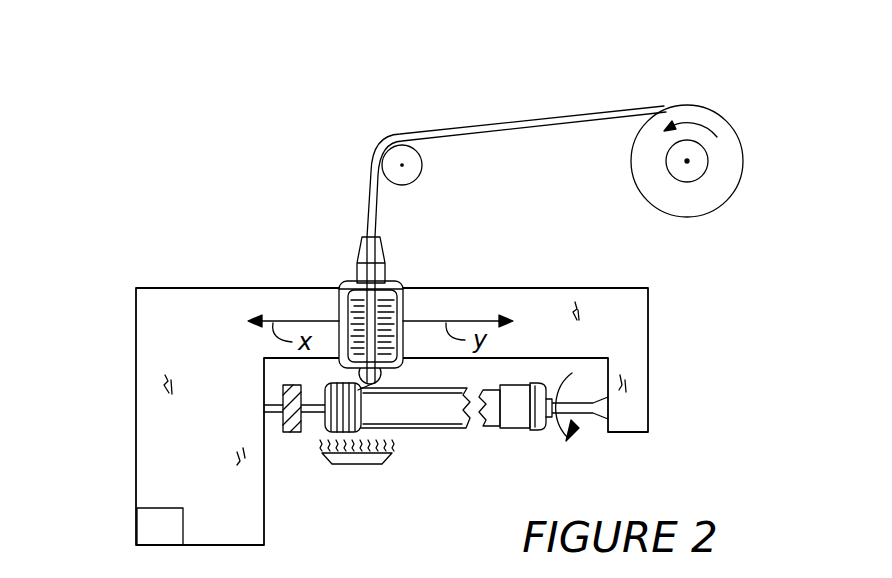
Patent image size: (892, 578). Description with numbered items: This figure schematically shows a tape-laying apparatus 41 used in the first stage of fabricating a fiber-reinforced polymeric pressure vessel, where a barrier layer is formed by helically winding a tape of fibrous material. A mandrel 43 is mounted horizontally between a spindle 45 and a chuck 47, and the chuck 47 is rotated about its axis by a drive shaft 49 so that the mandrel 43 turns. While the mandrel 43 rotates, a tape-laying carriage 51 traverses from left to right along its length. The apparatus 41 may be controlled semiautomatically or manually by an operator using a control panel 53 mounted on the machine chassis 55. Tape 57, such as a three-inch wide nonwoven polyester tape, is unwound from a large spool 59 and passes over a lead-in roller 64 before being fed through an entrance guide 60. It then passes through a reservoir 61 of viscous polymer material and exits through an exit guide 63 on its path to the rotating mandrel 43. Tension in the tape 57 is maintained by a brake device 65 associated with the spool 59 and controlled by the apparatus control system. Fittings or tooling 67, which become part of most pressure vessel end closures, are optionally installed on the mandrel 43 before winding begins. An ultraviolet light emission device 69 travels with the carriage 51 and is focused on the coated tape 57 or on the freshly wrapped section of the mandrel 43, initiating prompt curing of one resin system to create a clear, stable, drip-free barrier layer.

The tape-laying apparatus 41 is at (124, 277).
The mandrel 43 is at (447, 429).
The spindle 45 is at (572, 402).
The chuck 47 is at (289, 435).
The drive shaft 49 is at (275, 414).
The tape-laying carriage 51 is at (416, 280).
The control panel 53 is at (160, 526).
The machine chassis 55 is at (160, 447).
The tape 57 is at (365, 198).
The spool 59 is at (704, 202).
The entrance guide 60 is at (382, 258).
The reservoir 61 is at (352, 330).
The exit guide 63 is at (386, 383).
The lead-in roller 64 is at (423, 161).
The brake device 65 is at (708, 159).
The fittings or tooling 67 is at (544, 431).
The ultraviolet light emission device 69 is at (370, 461).